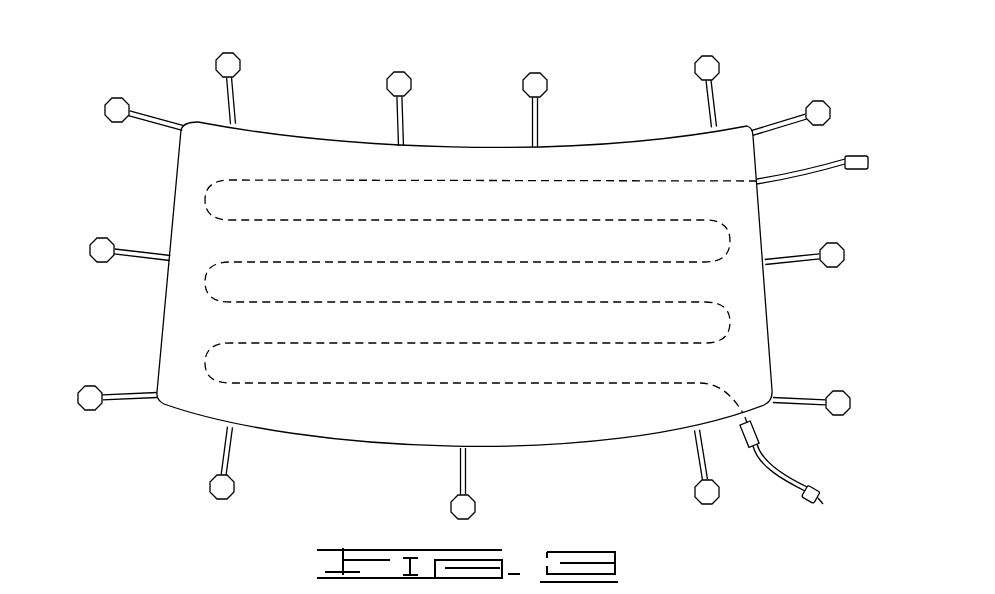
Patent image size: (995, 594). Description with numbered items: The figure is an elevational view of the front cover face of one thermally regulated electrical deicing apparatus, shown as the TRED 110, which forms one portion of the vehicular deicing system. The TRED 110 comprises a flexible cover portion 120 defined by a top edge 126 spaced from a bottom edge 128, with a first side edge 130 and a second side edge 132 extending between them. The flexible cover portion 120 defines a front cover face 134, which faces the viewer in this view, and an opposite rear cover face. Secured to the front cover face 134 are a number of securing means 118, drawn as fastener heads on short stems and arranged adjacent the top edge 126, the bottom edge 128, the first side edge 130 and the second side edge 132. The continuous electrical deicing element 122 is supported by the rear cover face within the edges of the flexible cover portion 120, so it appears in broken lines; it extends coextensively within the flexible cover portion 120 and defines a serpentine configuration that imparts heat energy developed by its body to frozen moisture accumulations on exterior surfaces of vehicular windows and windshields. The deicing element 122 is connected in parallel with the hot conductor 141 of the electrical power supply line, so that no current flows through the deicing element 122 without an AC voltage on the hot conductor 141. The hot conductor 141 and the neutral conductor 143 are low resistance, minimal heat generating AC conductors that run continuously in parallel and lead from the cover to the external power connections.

The TRED 110 is at (593, 78).
The securing means 118 is at (390, 78).
The flexible cover portion 120 is at (778, 345).
The continuous electrical deicing element 122 is at (779, 165).
The top edge 126 is at (440, 148).
The bottom edge 128 is at (373, 443).
The first side edge 130 is at (172, 218).
The second side edge 132 is at (763, 240).
The front cover face 134 is at (702, 158).
The hot conductor 141 is at (822, 507).
The neutral conductor 143 is at (825, 500).